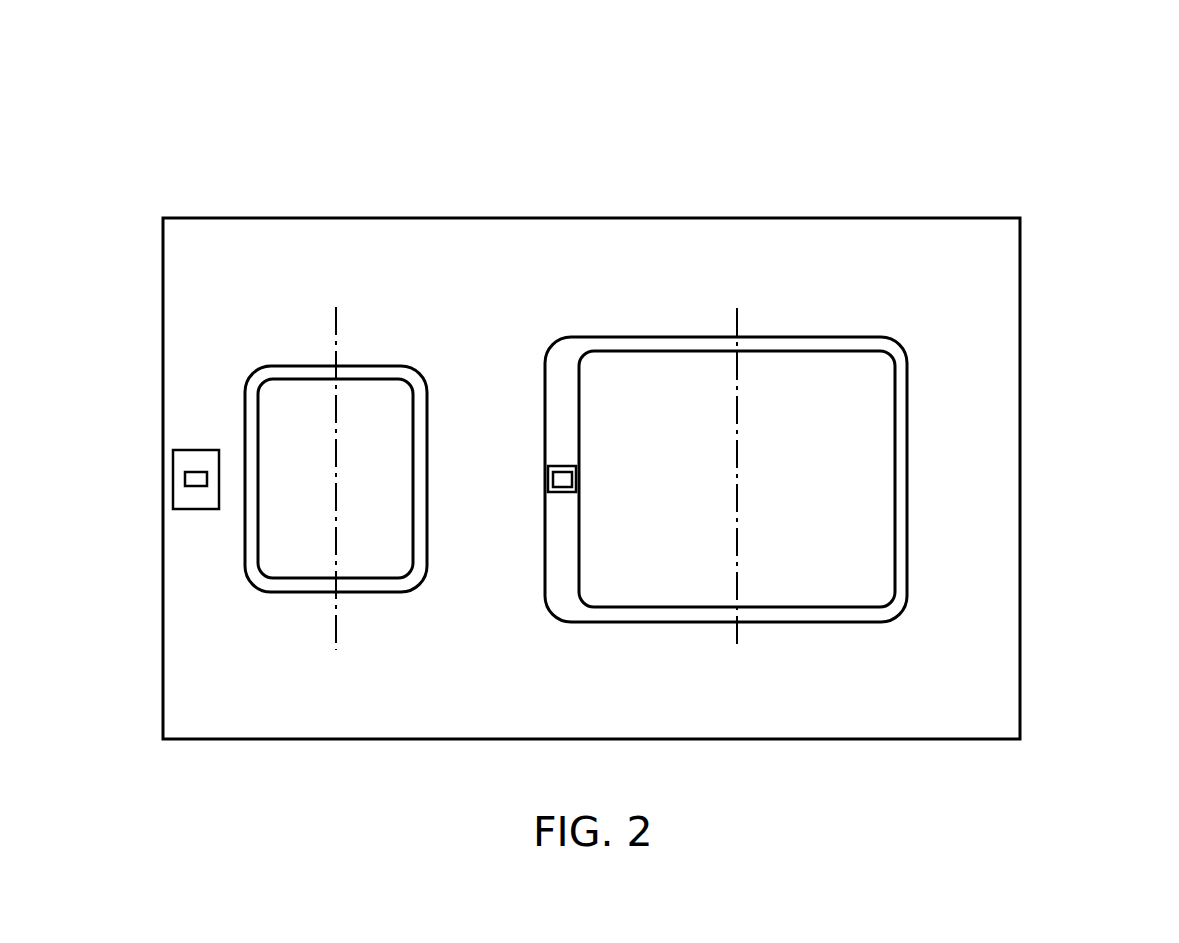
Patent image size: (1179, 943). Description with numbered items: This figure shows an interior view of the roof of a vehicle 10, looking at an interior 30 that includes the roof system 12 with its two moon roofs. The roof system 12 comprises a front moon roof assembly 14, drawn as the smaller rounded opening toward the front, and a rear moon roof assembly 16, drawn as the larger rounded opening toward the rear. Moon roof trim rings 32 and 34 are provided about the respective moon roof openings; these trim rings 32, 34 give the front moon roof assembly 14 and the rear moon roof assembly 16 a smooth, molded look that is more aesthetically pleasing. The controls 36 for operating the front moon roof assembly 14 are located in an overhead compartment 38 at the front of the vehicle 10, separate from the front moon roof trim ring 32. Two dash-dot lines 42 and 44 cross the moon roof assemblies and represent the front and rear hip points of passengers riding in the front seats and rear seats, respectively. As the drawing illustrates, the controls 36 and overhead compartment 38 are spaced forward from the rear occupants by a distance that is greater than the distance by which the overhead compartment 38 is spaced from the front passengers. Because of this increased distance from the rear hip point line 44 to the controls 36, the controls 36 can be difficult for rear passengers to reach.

The vehicle 10 is at (1053, 556).
The roof system 12 is at (457, 744).
The front moon roof assembly 14 is at (336, 453).
The rear moon roof assembly 16 is at (726, 452).
The interior 30 is at (1018, 157).
The moon roof trim ring 32 is at (303, 594).
The moon roof trim ring 34 is at (794, 622).
The controls 36 is at (125, 530).
The overhead compartment 38 is at (199, 514).
The line 42 is at (335, 356).
The line 44 is at (739, 480).